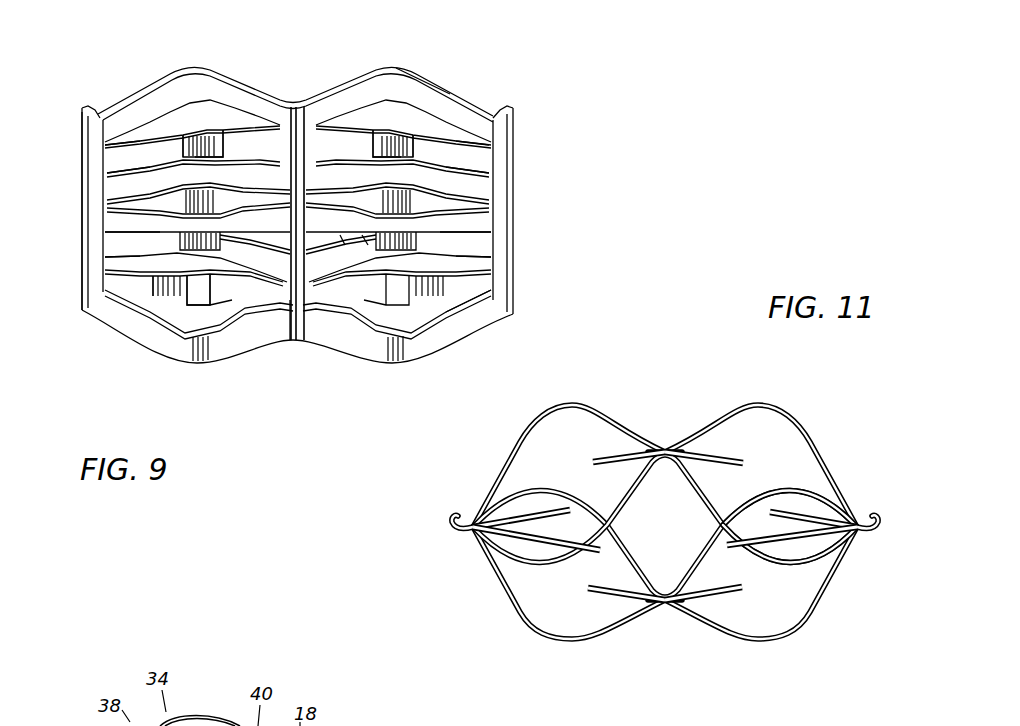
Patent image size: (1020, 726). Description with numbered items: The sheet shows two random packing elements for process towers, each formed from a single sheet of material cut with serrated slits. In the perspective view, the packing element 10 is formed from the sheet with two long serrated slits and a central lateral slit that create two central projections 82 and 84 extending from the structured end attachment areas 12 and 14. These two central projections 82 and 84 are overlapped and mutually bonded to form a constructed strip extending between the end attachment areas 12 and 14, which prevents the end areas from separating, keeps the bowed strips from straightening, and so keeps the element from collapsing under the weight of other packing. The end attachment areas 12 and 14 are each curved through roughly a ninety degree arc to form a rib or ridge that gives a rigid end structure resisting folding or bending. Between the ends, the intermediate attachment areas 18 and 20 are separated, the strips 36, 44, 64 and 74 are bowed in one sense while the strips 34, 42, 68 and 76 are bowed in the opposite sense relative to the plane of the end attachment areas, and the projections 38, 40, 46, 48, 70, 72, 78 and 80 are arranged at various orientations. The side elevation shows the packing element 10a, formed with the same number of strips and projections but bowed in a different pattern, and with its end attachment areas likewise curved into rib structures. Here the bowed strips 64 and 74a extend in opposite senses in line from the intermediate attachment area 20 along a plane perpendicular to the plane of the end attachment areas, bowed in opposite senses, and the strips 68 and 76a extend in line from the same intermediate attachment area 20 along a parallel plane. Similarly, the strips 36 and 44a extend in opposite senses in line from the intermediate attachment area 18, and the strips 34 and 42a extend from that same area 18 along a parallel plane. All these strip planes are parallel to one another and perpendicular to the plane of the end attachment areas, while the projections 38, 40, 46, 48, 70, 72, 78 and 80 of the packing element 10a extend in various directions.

In FIG. 9, the packing element 10 is at (298, 402).
In FIG. 11, the packing element 10a is at (714, 378).
In FIG. 9, the end attachment area 12 is at (84, 226).
In FIG. 11, the end attachment area 12 is at (450, 525).
In FIG. 9, the end attachment area 14 is at (514, 232).
In FIG. 11, the end attachment area 14 is at (874, 532).
In FIG. 9, the intermediate attachment area 18 is at (308, 108).
In FIG. 11, the intermediate attachment area 18 is at (662, 606).
In FIG. 9, the intermediate attachment area 20 is at (289, 322).
In FIG. 11, the intermediate attachment area 20 is at (663, 447).
In FIG. 9, the strip 34 is at (148, 96).
In FIG. 11, the strip 34 is at (535, 626).
In FIG. 9, the strip 36 is at (113, 187).
In FIG. 11, the strip 36 is at (525, 487).
In FIG. 9, the projection 38 is at (113, 157).
In FIG. 11, the projection 38 is at (490, 549).
In FIG. 9, the projection 40 is at (238, 140).
In FIG. 11, the projection 40 is at (606, 590).
In FIG. 9, the strip 42 is at (462, 110).
In FIG. 11, the strip 42a is at (700, 585).
In FIG. 9, the strip 44 is at (470, 190).
In FIG. 11, the strip 44a is at (796, 634).
In FIG. 9, the projection 46 is at (476, 160).
In FIG. 11, the projection 46 is at (797, 560).
In FIG. 9, the projection 48 is at (357, 137).
In FIG. 11, the projection 48 is at (740, 595).
In FIG. 9, the strip 64 is at (128, 327).
In FIG. 11, the strip 64 is at (523, 428).
In FIG. 9, the strip 68 is at (128, 252).
In FIG. 11, the strip 68 is at (533, 560).
In FIG. 9, the projection 70 is at (172, 290).
In FIG. 11, the projection 70 is at (500, 500).
In FIG. 9, the projection 72 is at (225, 306).
In FIG. 11, the projection 72 is at (598, 456).
In FIG. 9, the strip 74 is at (465, 320).
In FIG. 11, the strip 74a is at (820, 595).
In FIG. 9, the strip 76 is at (480, 253).
In FIG. 11, the strip 76a is at (805, 432).
In FIG. 9, the projection 78 is at (480, 280).
In FIG. 11, the projection 78 is at (800, 512).
In FIG. 9, the projection 80 is at (362, 232).
In FIG. 11, the projection 80 is at (736, 458).
In FIG. 9, the central projection 82 is at (122, 230).
In FIG. 9, the central projection 84 is at (345, 232).